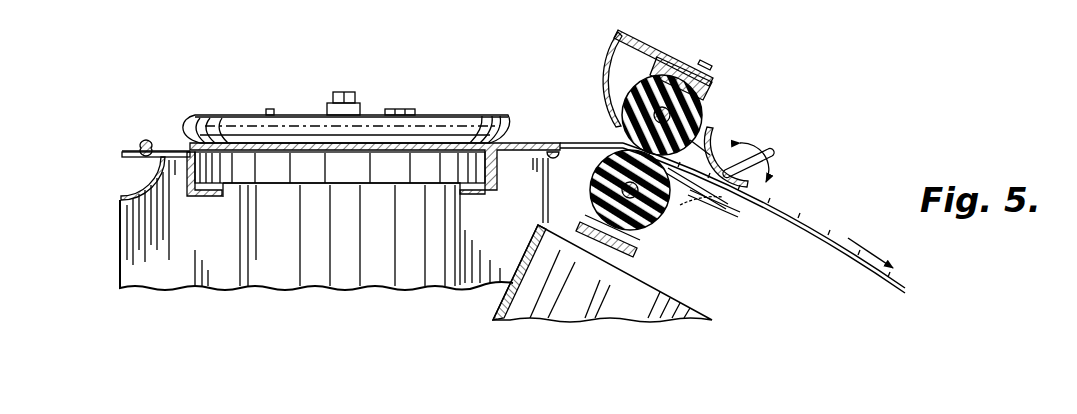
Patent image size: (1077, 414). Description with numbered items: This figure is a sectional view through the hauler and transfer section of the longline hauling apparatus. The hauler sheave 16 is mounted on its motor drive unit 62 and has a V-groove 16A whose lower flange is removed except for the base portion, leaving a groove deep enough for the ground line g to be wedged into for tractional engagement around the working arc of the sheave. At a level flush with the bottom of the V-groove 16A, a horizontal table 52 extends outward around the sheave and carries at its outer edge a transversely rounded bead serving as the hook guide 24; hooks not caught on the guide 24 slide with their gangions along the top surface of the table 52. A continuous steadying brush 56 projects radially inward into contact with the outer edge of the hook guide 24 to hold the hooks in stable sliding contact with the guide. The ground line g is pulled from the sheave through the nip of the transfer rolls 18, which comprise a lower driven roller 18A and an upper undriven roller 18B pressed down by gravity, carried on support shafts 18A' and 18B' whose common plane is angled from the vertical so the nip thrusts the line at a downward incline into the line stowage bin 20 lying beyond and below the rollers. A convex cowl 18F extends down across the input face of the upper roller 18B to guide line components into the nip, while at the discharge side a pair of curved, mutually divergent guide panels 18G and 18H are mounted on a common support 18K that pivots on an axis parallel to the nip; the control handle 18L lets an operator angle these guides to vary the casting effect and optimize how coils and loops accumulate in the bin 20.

The hauler sheave 16 is at (477, 110).
The V-groove 16A is at (503, 147).
The transfer rolls 18 is at (725, 74).
The lower driven roller 18A is at (634, 217).
The support shaft 18A' is at (566, 202).
The upper undriven roller 18B is at (704, 115).
The support shaft 18B' is at (679, 55).
The convex cowl 18F is at (610, 50).
The curved guide panel 18G is at (717, 143).
The curved guide panel 18H is at (693, 197).
The common support 18K is at (687, 220).
The control handle 18L is at (767, 153).
The line stowage bin 20 is at (497, 304).
The hook guide 24 is at (168, 150).
The horizontal table 52 is at (174, 151).
The steadying brush 56 is at (130, 152).
The motor drive unit 62 is at (283, 260).
The ground line g is at (797, 210).